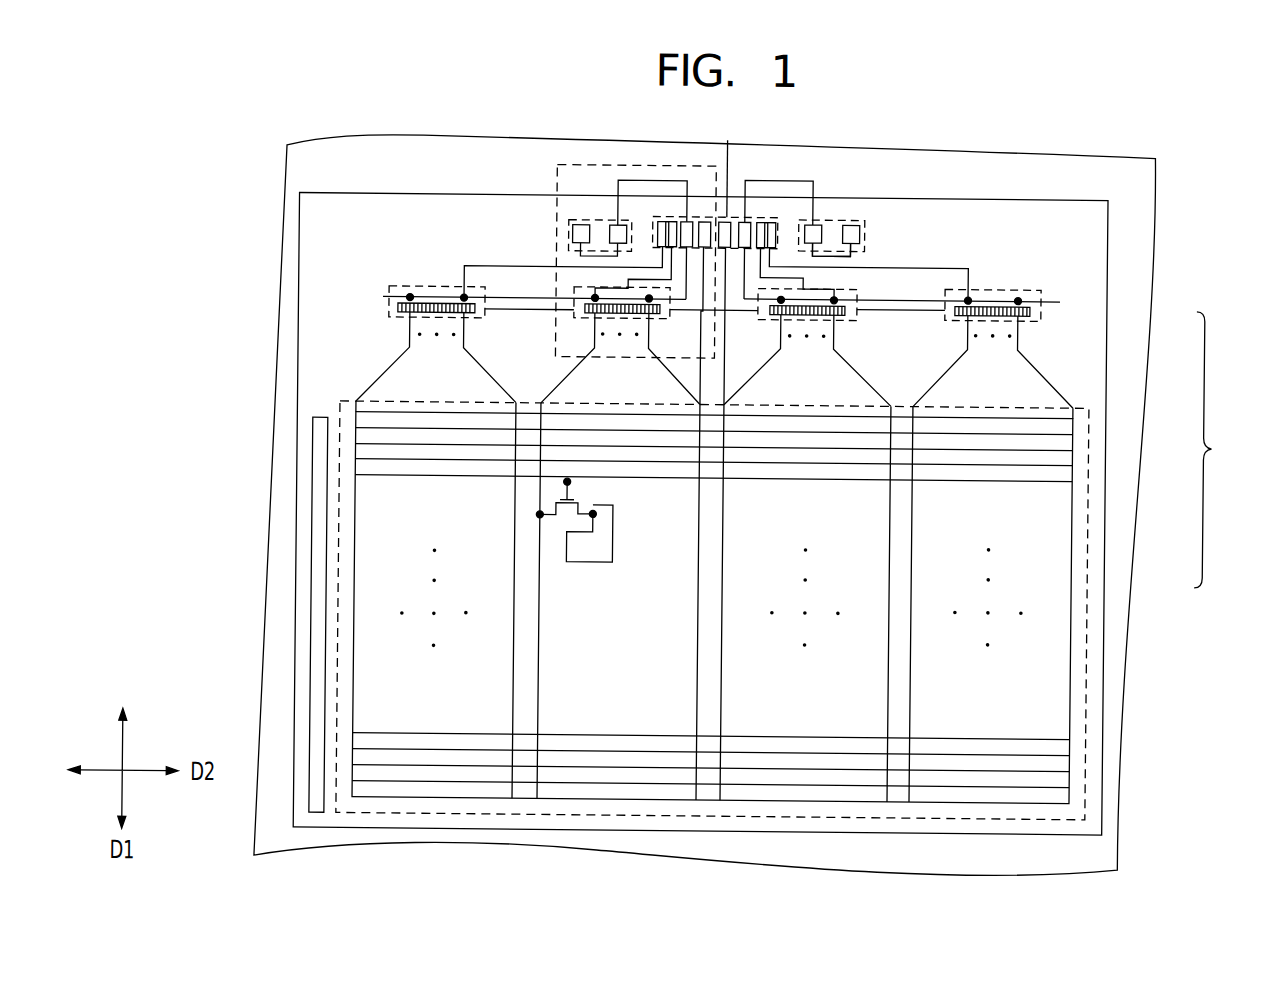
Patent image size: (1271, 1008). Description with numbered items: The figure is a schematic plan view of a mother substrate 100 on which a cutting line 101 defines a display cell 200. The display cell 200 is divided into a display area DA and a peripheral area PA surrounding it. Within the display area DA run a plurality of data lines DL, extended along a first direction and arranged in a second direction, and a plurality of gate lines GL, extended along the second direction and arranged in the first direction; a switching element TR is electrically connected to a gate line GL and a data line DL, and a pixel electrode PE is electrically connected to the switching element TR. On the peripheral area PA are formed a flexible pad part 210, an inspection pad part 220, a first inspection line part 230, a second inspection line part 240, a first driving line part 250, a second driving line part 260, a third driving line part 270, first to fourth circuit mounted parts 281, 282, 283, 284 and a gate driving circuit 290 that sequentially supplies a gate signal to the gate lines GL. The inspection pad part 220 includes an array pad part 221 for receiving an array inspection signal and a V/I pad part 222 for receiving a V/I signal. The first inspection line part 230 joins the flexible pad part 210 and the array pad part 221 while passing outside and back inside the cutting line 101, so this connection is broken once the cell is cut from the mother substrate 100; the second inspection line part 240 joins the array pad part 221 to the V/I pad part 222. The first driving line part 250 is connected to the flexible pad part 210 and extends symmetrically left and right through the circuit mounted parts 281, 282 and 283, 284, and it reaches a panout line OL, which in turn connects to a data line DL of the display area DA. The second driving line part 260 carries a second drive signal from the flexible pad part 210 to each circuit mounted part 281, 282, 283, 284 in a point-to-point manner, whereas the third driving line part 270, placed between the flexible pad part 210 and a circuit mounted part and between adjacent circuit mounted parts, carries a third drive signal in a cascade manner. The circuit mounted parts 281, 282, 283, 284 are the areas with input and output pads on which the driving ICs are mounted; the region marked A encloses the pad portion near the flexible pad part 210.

The mother substrate 100 is at (337, 143).
The cutting line 101 is at (1105, 259).
The display cell 200 is at (1220, 450).
The flexible pad part 210 is at (724, 140).
The inspection pad part 220 is at (811, 224).
The array pad part 221 is at (822, 234).
The V/I pad part 222 is at (857, 237).
The first inspection line part 230 is at (615, 183).
The second inspection line part 240 is at (844, 257).
The first driving line part 250 is at (390, 300).
The second driving line part 260 is at (626, 282).
The third driving line part 270 is at (535, 314).
The first circuit mounted part 281 is at (653, 321).
The second circuit mounted part 282 is at (468, 322).
The third circuit mounted part 283 is at (838, 320).
The fourth circuit mounted part 284 is at (1025, 318).
The gate driving circuit 290 is at (316, 459).
The region A is at (554, 184).
The peripheral area PA is at (1071, 318).
The display area DA is at (1049, 565).
The gate line GL is at (960, 479).
The data line DL is at (542, 602).
The panout line OL is at (698, 388).
The switching element TR is at (569, 498).
The pixel electrode PE is at (613, 538).